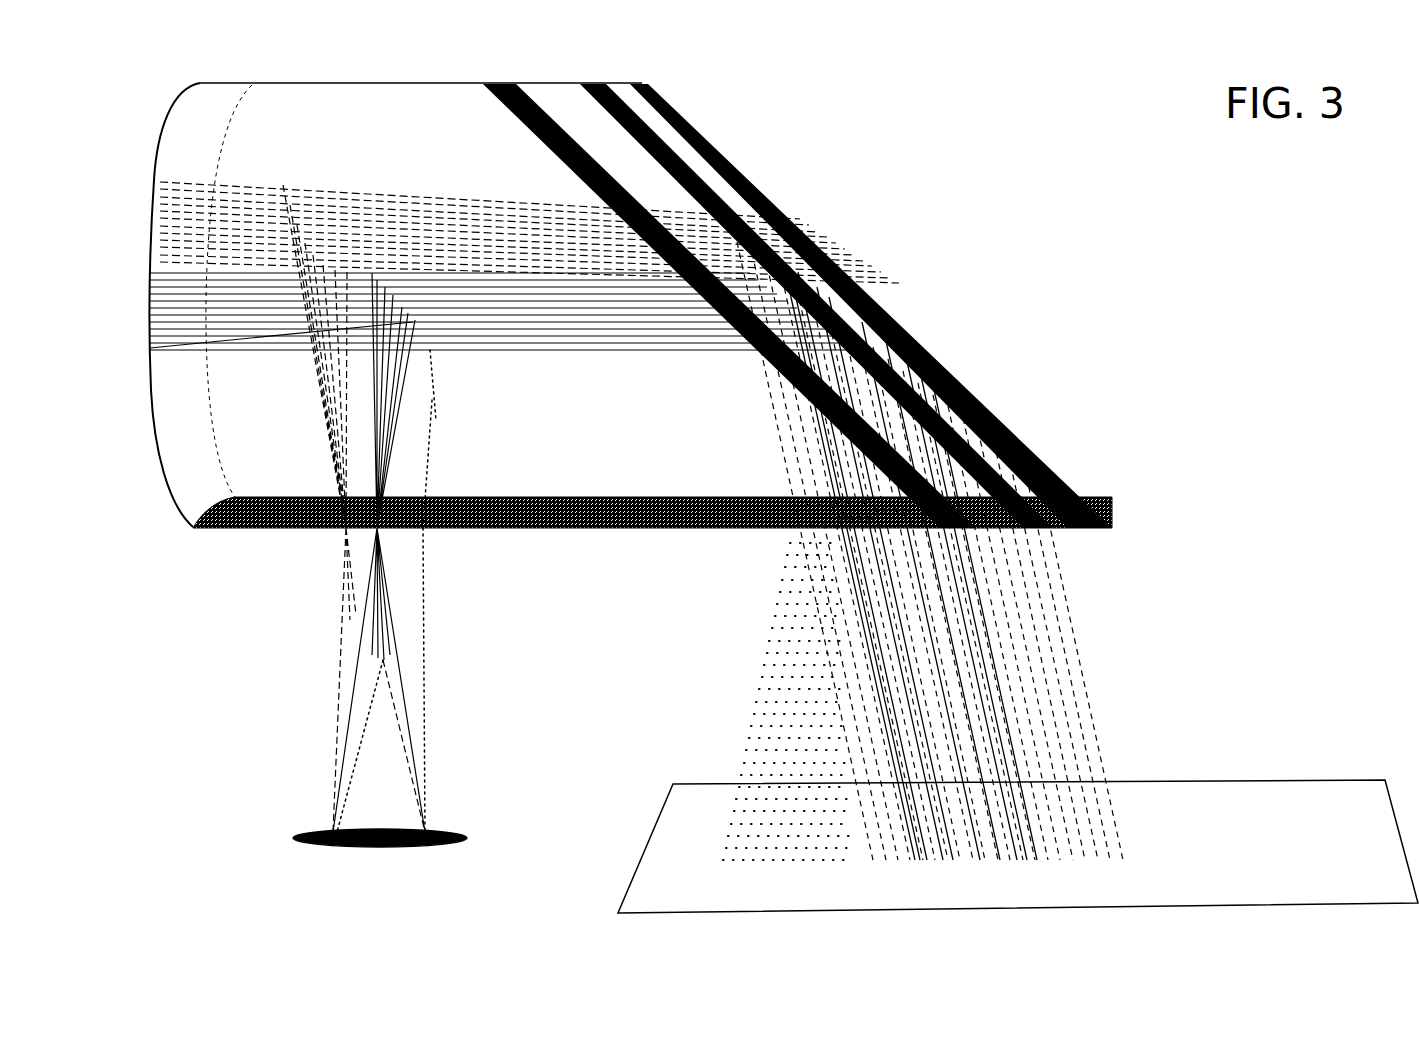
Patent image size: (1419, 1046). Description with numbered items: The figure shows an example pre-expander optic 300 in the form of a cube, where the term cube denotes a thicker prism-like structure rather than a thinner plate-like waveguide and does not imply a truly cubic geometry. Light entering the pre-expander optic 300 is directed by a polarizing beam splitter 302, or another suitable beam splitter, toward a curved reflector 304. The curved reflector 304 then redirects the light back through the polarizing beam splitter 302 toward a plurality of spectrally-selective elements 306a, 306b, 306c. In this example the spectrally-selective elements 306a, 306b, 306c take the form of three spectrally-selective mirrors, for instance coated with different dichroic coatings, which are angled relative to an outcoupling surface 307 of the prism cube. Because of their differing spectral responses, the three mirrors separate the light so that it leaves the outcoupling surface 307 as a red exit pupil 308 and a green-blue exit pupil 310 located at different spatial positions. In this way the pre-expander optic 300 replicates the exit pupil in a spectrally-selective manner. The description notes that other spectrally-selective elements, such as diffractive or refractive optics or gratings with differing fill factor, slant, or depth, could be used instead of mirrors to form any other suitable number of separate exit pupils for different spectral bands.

The pre-expander optic 300 is at (82, 98).
The polarizing beam splitter 302 is at (423, 355).
The curved reflector 304 is at (148, 368).
The spectrally-selective element 306a is at (491, 76).
The spectrally-selective element 306b is at (588, 76).
The spectrally-selective element 306c is at (646, 77).
The outcoupling surface 307 is at (664, 538).
The red exit pupil 308 is at (755, 645).
The green-blue exit pupil 310 is at (1097, 660).